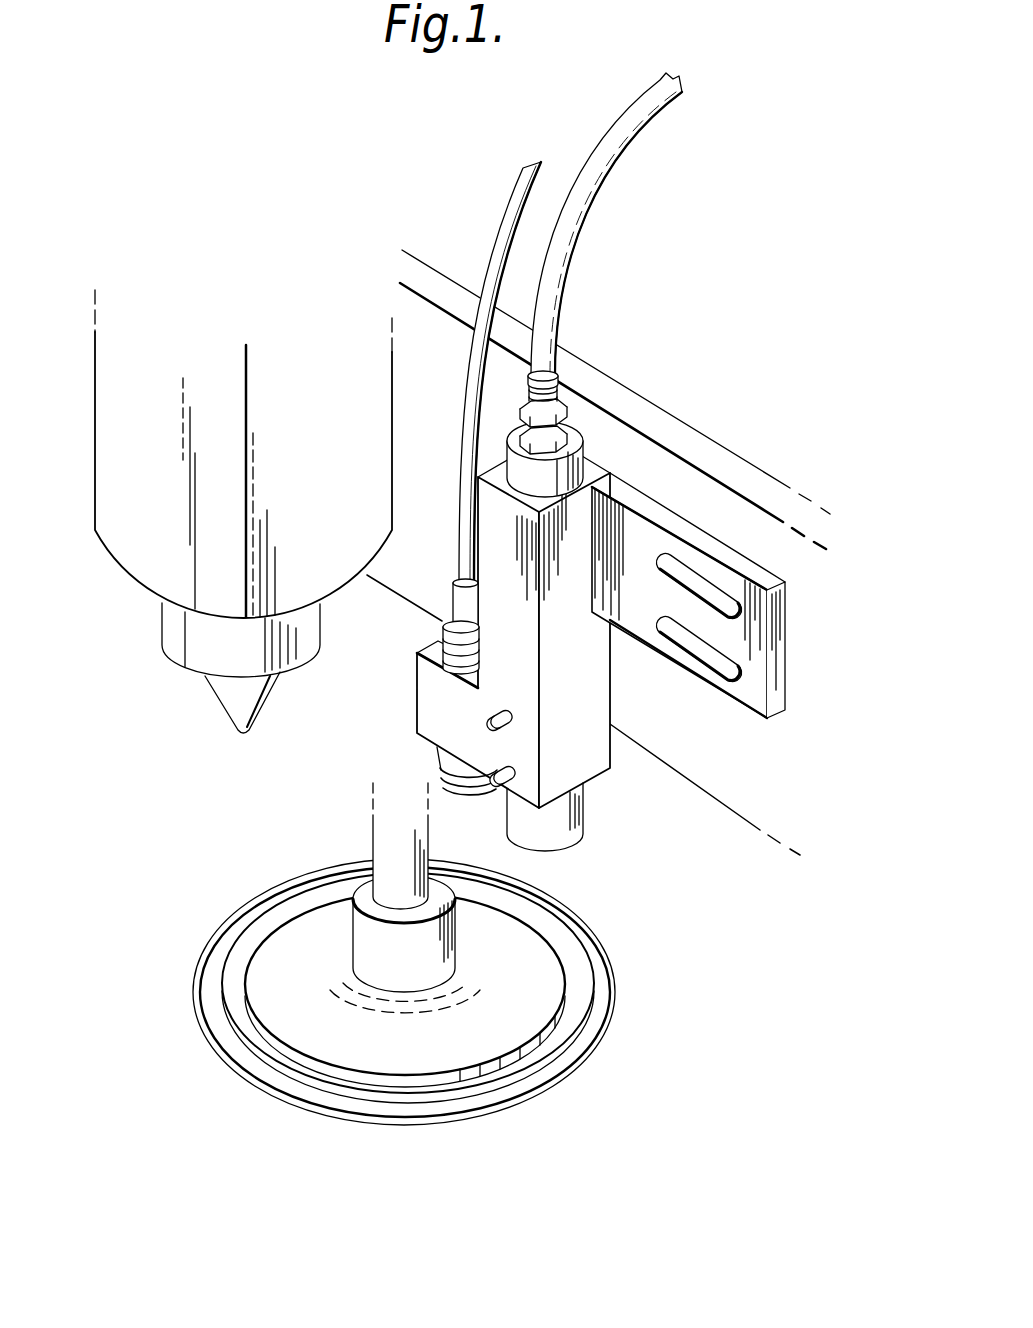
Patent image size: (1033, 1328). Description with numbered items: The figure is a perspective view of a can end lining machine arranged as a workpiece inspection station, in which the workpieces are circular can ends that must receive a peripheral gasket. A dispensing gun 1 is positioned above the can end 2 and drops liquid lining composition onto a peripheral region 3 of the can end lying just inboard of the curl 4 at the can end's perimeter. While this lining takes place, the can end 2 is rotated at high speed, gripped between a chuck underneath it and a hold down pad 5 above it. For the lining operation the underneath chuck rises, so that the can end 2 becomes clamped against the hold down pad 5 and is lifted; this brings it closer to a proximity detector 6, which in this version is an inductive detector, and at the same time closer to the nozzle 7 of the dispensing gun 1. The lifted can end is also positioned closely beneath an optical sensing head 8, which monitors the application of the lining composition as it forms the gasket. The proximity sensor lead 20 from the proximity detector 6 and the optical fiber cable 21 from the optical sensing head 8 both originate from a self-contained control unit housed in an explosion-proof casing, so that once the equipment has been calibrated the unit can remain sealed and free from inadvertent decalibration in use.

The dispensing gun 1 is at (150, 572).
The can end 2 is at (403, 985).
The peripheral region 3 is at (211, 1006).
The curl 4 is at (306, 1110).
The hold down pad 5 is at (540, 977).
The proximity detector 6 is at (475, 788).
The nozzle 7 is at (232, 725).
The optical sensing head 8 is at (583, 820).
The proximity sensor lead 20 is at (503, 216).
The optical fiber cable 21 is at (598, 199).